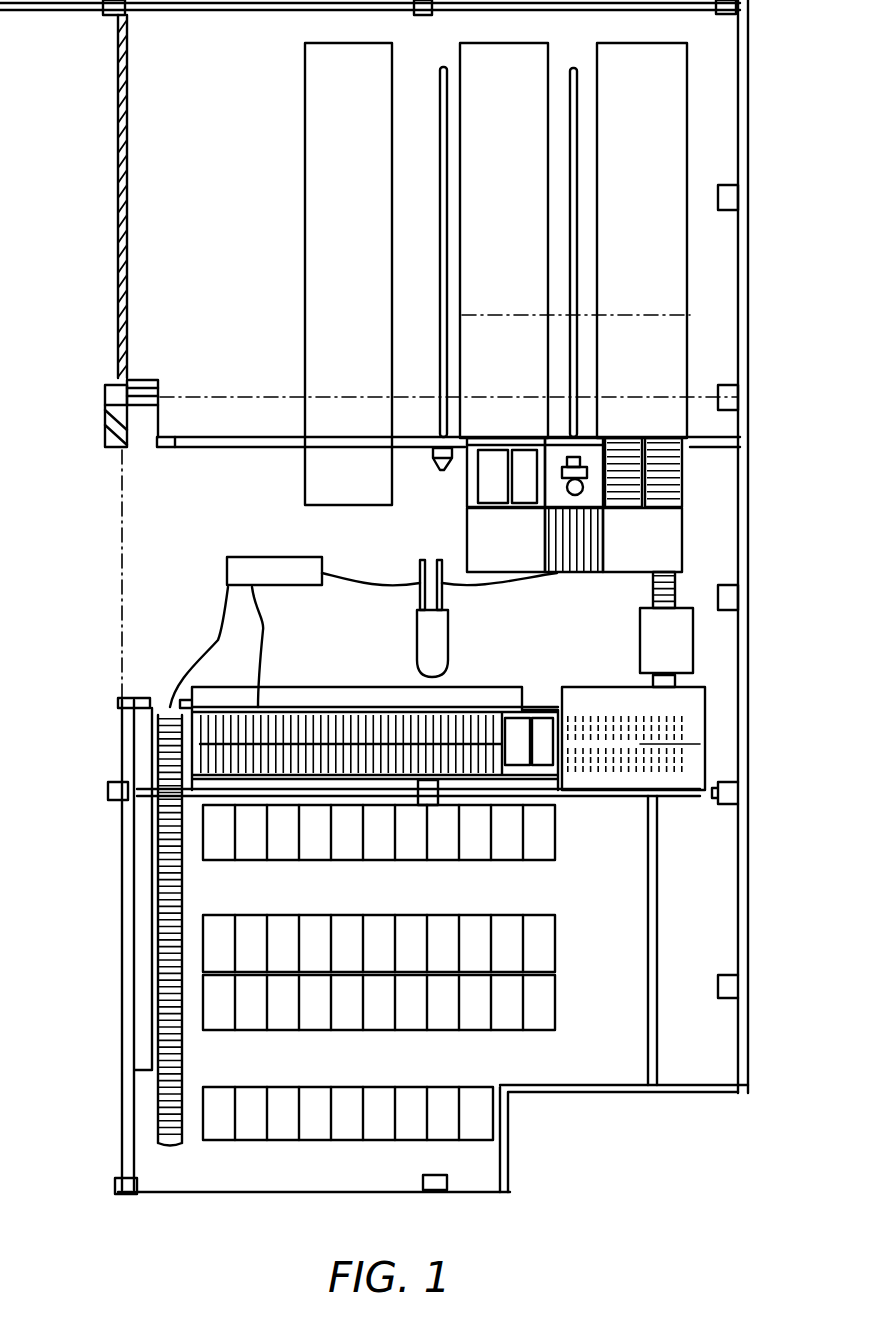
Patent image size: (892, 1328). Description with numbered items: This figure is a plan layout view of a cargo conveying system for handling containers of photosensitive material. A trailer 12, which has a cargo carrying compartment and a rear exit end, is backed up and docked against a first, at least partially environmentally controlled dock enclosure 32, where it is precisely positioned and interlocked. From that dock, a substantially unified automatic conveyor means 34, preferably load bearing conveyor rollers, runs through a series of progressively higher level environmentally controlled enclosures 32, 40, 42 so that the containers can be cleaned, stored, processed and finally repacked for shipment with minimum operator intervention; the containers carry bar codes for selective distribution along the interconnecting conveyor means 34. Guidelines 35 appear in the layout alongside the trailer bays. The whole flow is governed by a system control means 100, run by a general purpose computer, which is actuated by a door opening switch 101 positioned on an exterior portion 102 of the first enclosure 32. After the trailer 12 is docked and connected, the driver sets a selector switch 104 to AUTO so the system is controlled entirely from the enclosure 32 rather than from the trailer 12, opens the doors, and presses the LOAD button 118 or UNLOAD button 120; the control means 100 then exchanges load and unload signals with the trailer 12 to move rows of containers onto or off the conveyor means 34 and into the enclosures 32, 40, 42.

The trailer 12 is at (521, 240).
The environmentally controlled dock enclosure 32 is at (208, 641).
The automatic conveyor means 34 is at (677, 593).
The guidelines 35 is at (443, 67).
The environmentally controlled enclosure 40 is at (160, 592).
The environmentally controlled enclosure 42 is at (243, 902).
The system control means 100 is at (291, 557).
The door opening switch 101 is at (244, 12).
The exterior portion 102 is at (58, 8).
The selector switch 104 is at (430, 501).
The LOAD button 118 is at (430, 501).
The UNLOAD button 120 is at (443, 472).